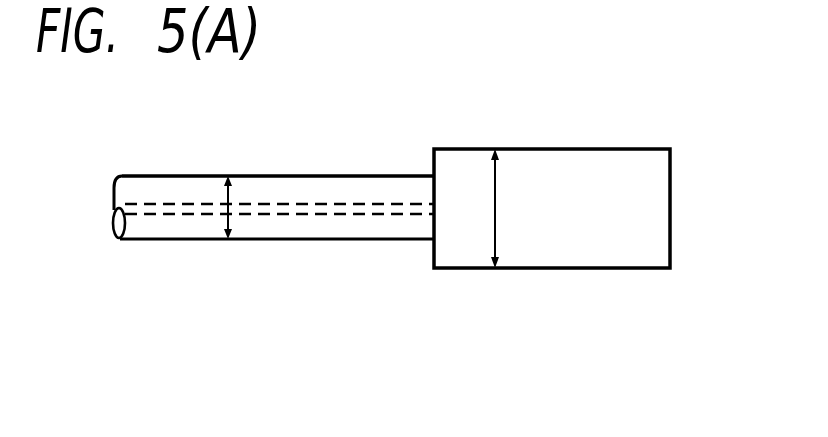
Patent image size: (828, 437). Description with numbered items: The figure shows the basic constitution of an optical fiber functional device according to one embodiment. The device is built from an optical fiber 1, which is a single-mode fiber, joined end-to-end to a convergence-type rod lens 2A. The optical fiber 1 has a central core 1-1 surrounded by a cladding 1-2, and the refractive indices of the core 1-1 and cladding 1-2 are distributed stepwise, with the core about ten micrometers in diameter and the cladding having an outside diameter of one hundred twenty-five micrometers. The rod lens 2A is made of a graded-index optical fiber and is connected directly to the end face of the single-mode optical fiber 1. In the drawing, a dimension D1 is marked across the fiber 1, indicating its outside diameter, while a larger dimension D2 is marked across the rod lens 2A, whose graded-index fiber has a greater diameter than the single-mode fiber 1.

The optical fiber 1 is at (316, 184).
The core 1-1 is at (385, 212).
The cladding 1-2 is at (382, 187).
The convergence-type rod lens 2A is at (670, 184).
The diameter of optical fiber D1 is at (231, 196).
The diameter of rod lens D2 is at (496, 187).